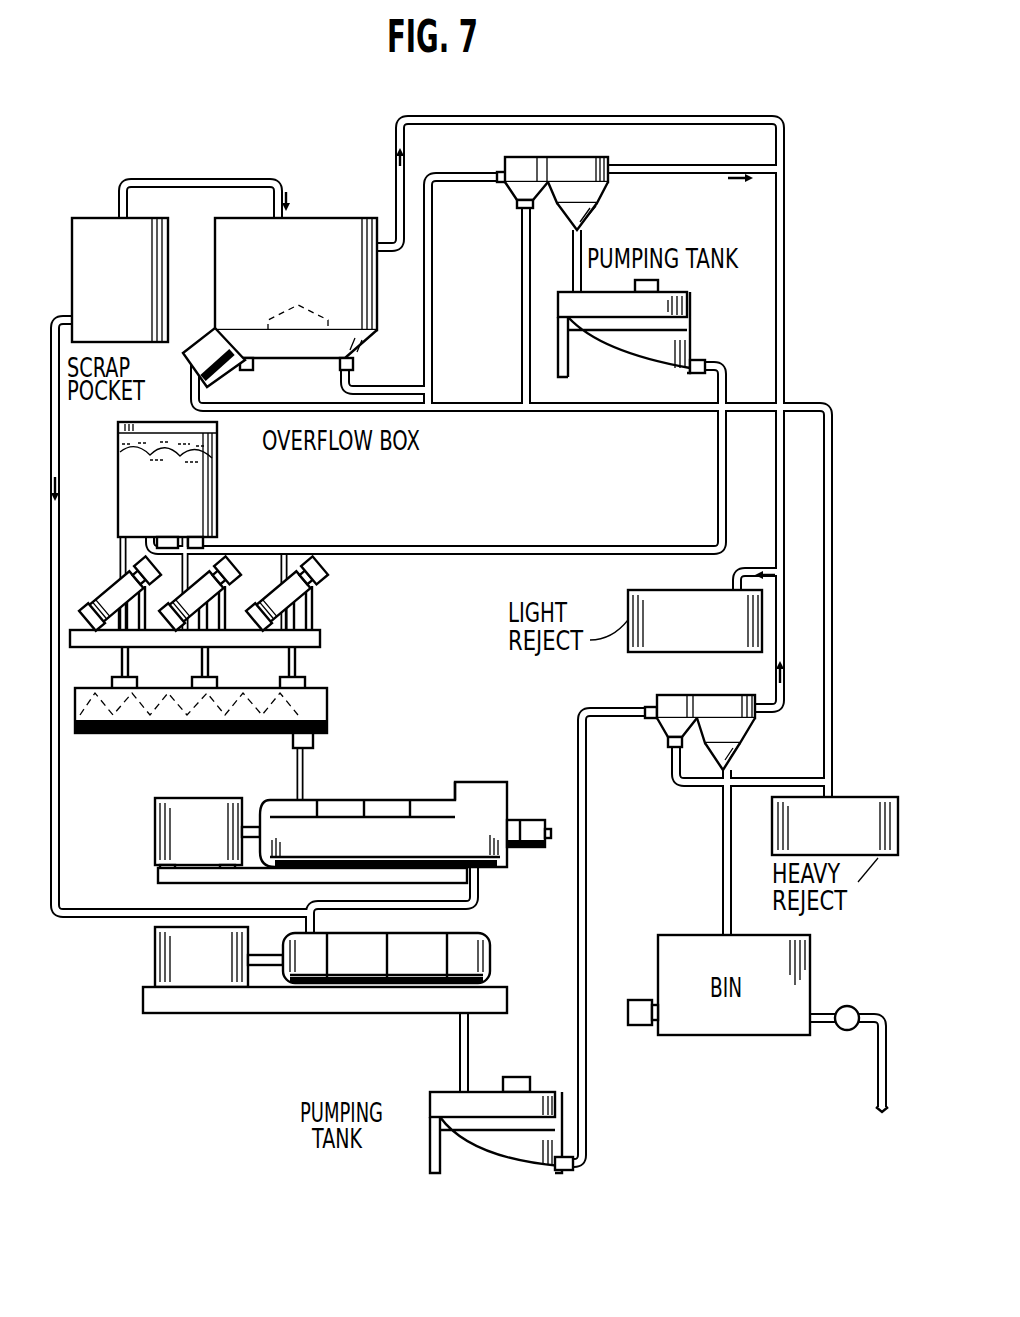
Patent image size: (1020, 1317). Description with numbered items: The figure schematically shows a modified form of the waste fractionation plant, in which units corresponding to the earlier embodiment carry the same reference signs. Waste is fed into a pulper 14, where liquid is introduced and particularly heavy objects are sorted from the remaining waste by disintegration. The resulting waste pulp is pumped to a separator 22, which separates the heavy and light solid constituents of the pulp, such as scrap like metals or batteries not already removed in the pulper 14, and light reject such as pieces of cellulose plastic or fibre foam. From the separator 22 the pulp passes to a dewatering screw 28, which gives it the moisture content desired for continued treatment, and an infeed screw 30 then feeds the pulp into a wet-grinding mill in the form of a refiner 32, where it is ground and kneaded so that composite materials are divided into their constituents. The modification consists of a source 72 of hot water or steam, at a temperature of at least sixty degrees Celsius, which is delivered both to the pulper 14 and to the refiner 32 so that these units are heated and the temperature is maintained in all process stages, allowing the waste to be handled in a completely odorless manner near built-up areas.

The source of hot water or steam 72 is at (94, 226).
The pulper 14 is at (308, 232).
The separator 22 is at (522, 178).
The dewatering screw 28 is at (318, 618).
The infeed screw 30 is at (471, 798).
The refiner 32 is at (467, 948).